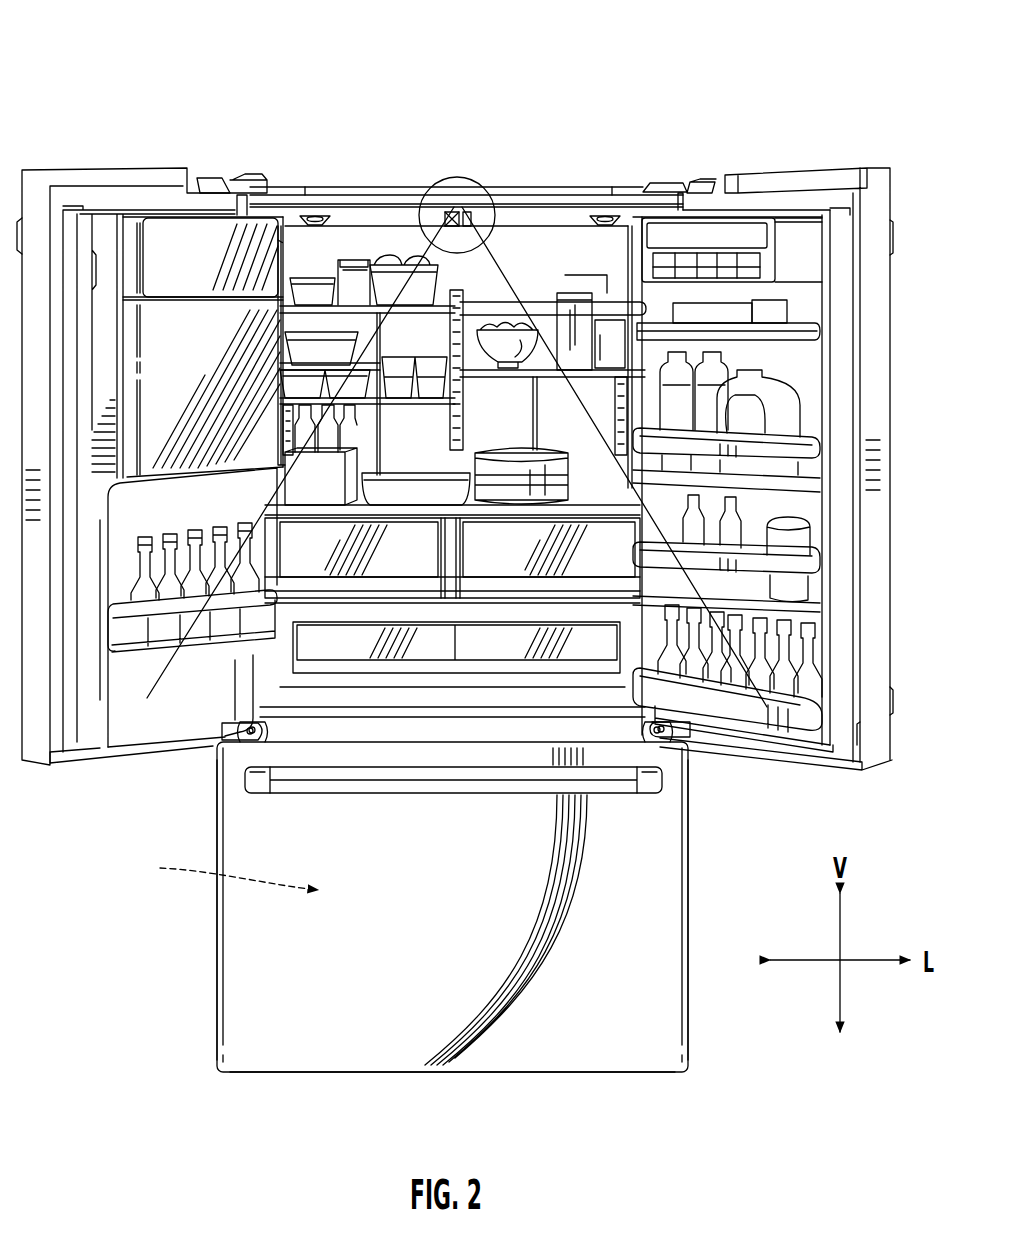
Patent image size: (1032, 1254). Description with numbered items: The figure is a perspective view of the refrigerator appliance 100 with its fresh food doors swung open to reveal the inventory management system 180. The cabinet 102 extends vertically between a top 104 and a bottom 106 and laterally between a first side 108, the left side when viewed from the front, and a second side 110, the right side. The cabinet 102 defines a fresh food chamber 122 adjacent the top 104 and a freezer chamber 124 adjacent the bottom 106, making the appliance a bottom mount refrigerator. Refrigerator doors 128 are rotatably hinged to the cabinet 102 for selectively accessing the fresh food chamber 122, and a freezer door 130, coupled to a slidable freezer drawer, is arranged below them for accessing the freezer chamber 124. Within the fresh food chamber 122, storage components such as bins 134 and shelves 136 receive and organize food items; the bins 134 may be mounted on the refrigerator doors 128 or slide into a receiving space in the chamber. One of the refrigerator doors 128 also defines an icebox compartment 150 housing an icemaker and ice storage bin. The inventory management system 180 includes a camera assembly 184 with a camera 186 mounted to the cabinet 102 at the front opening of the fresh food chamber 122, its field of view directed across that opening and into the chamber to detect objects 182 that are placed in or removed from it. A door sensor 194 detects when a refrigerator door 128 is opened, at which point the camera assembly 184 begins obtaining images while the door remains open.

The refrigerator appliance 100 is at (836, 100).
The cabinet 102 is at (624, 190).
The top 104 is at (401, 184).
The bottom 106 is at (318, 1082).
The first side 108 is at (218, 1082).
The second side 110 is at (688, 1082).
The fresh food chamber 122 is at (564, 250).
The freezer chamber 124 is at (220, 872).
The refrigerator doors 128 is at (880, 565).
The freezer door 130 is at (482, 934).
The bins 134 is at (800, 718).
The shelves 136 is at (312, 280).
The icebox compartment 150 is at (183, 284).
The inventory management system 180 is at (446, 158).
The objects 182 is at (778, 413).
The camera assembly 184 is at (468, 175).
The camera 186 is at (484, 200).
The door sensor 194 is at (528, 200).